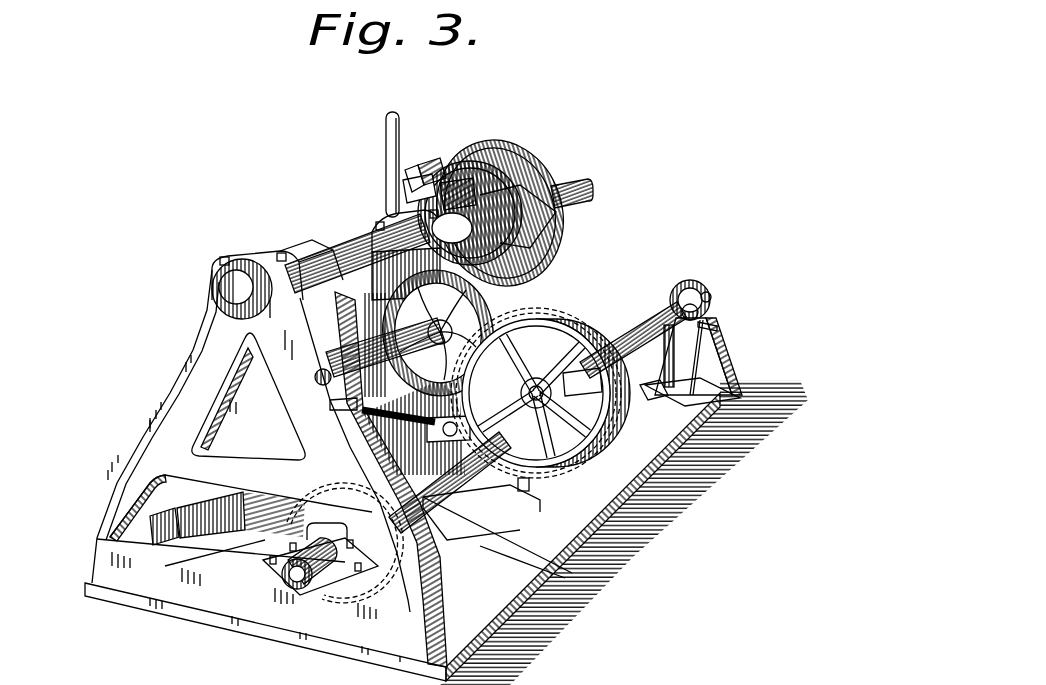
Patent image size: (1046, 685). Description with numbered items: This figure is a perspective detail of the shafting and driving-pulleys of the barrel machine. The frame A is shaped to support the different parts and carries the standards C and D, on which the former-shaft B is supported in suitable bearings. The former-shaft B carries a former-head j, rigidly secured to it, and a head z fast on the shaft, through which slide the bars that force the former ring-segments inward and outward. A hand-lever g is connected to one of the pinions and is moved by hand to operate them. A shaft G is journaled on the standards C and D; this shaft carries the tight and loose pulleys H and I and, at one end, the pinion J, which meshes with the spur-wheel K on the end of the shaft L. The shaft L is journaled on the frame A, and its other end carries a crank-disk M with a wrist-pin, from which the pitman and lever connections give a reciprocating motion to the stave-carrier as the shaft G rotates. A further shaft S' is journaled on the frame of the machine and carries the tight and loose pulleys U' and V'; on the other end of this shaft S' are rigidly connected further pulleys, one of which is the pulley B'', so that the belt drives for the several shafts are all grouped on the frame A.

The frame A is at (170, 592).
The former-shaft B is at (572, 170).
The pulley B'' is at (690, 439).
The standard C is at (182, 378).
The standard D is at (330, 320).
The shaft G is at (318, 375).
The tight pulley H is at (342, 244).
The loose pulley I is at (480, 312).
The pinion J is at (560, 295).
The spur-wheel K is at (577, 323).
The shaft L is at (615, 345).
The crank-disk M is at (697, 303).
The shaft S' is at (497, 525).
The tight pulley U' is at (269, 543).
The loose pulley V' is at (555, 579).
The hand-lever g is at (384, 137).
The former-head j is at (487, 143).
The head z is at (430, 167).